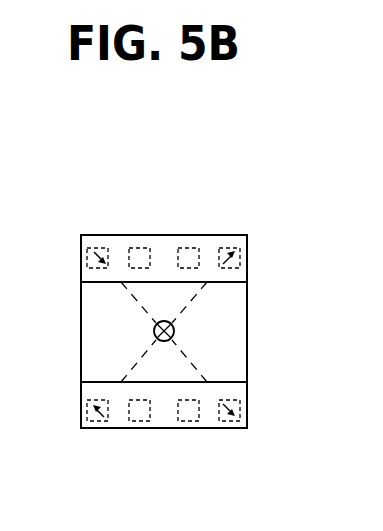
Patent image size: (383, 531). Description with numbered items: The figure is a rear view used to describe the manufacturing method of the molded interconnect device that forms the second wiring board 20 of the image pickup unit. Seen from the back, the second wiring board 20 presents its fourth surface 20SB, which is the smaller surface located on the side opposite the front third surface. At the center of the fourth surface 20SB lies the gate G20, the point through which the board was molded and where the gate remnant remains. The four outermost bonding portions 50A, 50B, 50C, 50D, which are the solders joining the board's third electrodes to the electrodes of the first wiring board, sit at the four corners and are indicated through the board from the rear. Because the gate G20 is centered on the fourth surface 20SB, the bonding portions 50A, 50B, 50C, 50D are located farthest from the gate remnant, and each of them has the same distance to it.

The second wiring board 20 is at (230, 235).
The fourth surface 20SB is at (164, 378).
The gate G20 is at (164, 320).
The bonding portion 50A is at (79, 259).
The bonding portion 50B is at (249, 255).
The bonding portion 50C is at (80, 408).
The bonding portion 50D is at (247, 388).